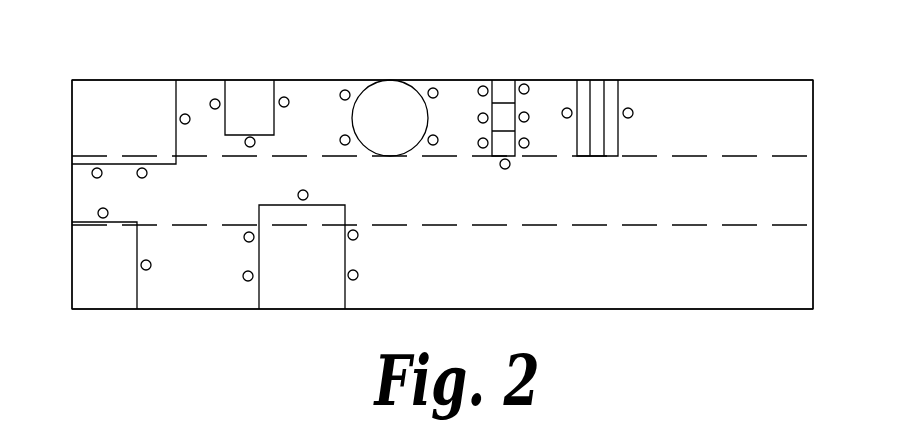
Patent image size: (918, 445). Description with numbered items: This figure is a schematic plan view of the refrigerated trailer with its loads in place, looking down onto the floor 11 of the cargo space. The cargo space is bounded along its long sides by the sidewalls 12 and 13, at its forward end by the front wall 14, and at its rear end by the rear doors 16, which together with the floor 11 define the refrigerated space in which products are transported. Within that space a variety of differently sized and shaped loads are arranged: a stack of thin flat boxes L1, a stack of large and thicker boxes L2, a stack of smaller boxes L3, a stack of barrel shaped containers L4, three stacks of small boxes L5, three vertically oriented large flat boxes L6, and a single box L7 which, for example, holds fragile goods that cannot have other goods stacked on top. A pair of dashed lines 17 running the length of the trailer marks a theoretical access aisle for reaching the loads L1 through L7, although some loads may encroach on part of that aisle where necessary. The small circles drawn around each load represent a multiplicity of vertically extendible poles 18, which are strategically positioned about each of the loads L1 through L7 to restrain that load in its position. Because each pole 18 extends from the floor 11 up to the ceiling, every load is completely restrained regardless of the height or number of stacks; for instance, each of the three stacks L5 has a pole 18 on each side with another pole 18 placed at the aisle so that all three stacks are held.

The floor 11 is at (550, 283).
The sidewall 12 is at (702, 77).
The sidewall 13 is at (622, 311).
The front wall 14 is at (72, 203).
The rear doors 16 is at (813, 121).
The dashed lines 17 is at (680, 156).
The vertically extendible poles 18 is at (214, 99).
The stack of thin flat boxes L1 is at (90, 290).
The stack of large and thicker boxes L2 is at (103, 136).
The stack of smaller boxes L3 is at (234, 119).
The stack of barrel shaped containers L4 is at (374, 136).
The three stacks of small boxes L5 is at (503, 92).
The three vertically oriented large flat boxes L6 is at (597, 93).
The single box L7 is at (314, 287).